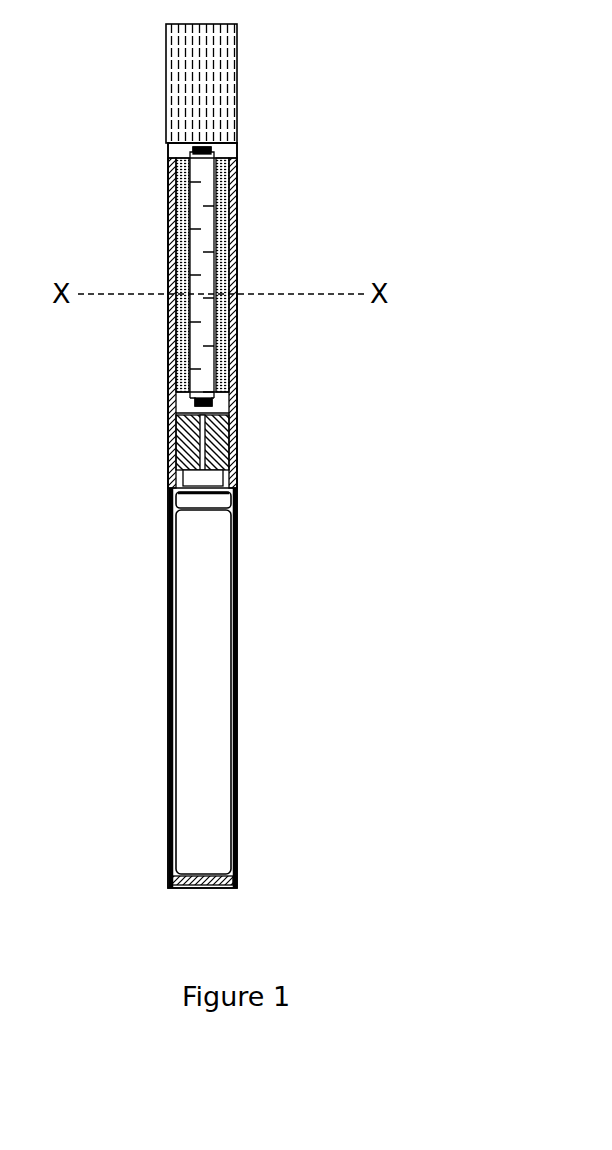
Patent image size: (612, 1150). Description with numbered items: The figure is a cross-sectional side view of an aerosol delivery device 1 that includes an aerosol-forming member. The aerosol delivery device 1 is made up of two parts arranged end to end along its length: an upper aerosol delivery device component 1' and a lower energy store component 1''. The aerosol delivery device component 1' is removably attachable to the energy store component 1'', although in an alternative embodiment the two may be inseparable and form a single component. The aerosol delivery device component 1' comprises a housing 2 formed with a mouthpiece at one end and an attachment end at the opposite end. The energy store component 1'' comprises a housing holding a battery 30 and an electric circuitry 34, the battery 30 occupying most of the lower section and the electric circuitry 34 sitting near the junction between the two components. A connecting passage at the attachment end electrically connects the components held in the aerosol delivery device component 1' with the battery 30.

The aerosol delivery device 1 is at (176, 456).
The aerosol delivery device component 1' is at (234, 323).
The energy store component 1'' is at (215, 680).
The housing 2 is at (196, 515).
The battery 30 is at (169, 692).
The electric circuitry 34 is at (222, 497).